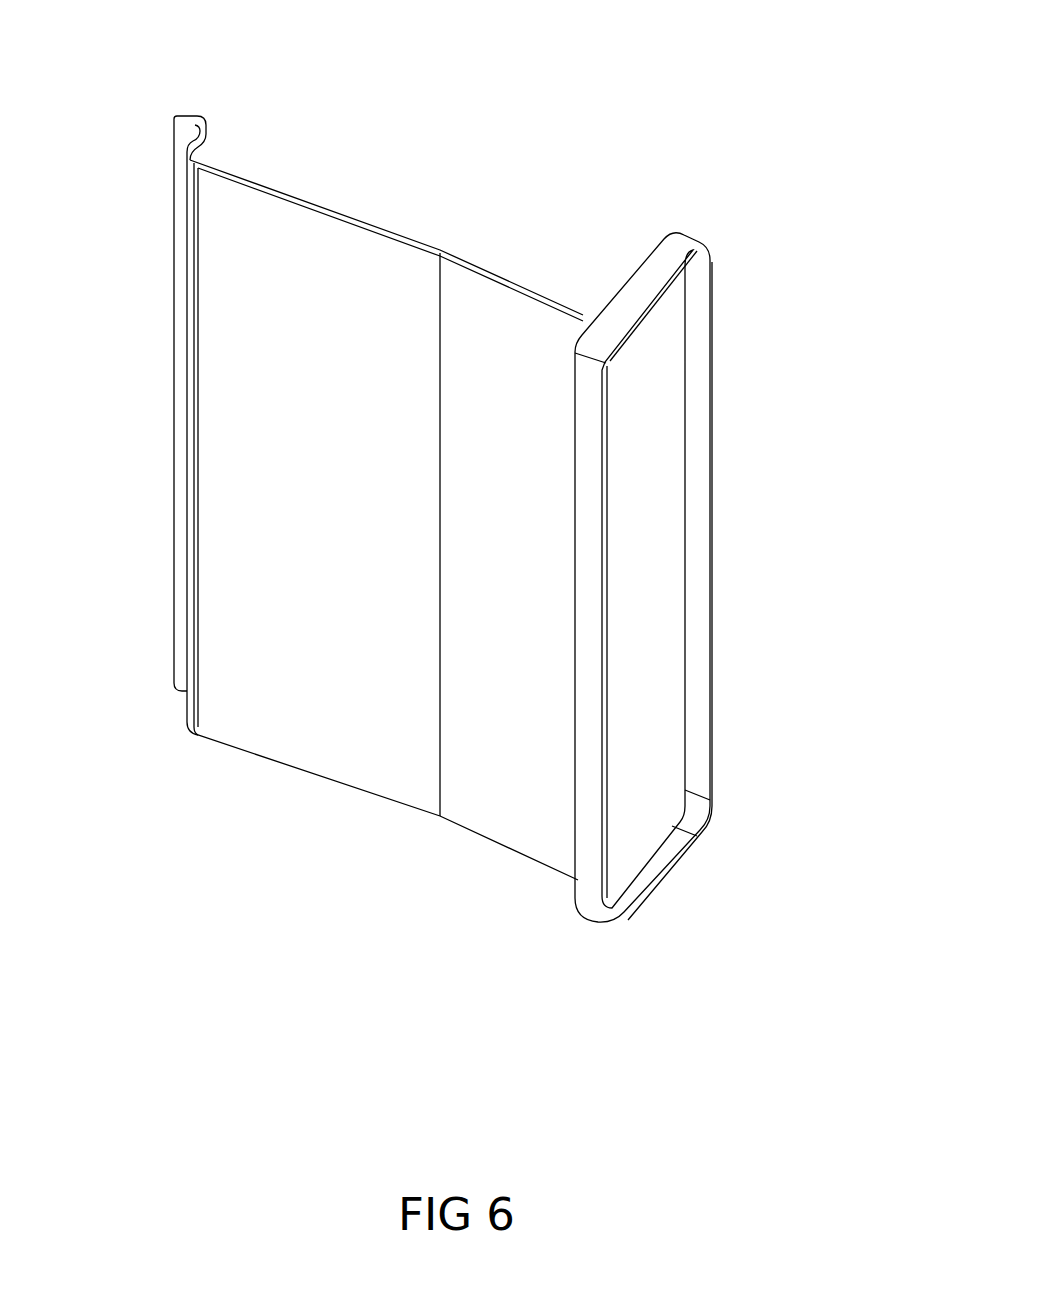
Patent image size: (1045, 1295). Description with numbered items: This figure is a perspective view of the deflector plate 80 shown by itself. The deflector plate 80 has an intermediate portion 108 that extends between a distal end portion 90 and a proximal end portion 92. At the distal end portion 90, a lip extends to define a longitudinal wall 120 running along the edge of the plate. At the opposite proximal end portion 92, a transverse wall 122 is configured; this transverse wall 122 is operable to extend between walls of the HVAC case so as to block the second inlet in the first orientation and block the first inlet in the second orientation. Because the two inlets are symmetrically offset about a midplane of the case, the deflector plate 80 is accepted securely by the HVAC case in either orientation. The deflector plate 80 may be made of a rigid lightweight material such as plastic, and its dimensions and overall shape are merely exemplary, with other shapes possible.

The deflector plate 80 is at (614, 41).
The distal end portion 90 is at (178, 378).
The proximal end portion 92 is at (592, 878).
The intermediate portion 108 is at (333, 735).
The longitudinal wall 120 is at (178, 227).
The transverse wall 122 is at (668, 492).